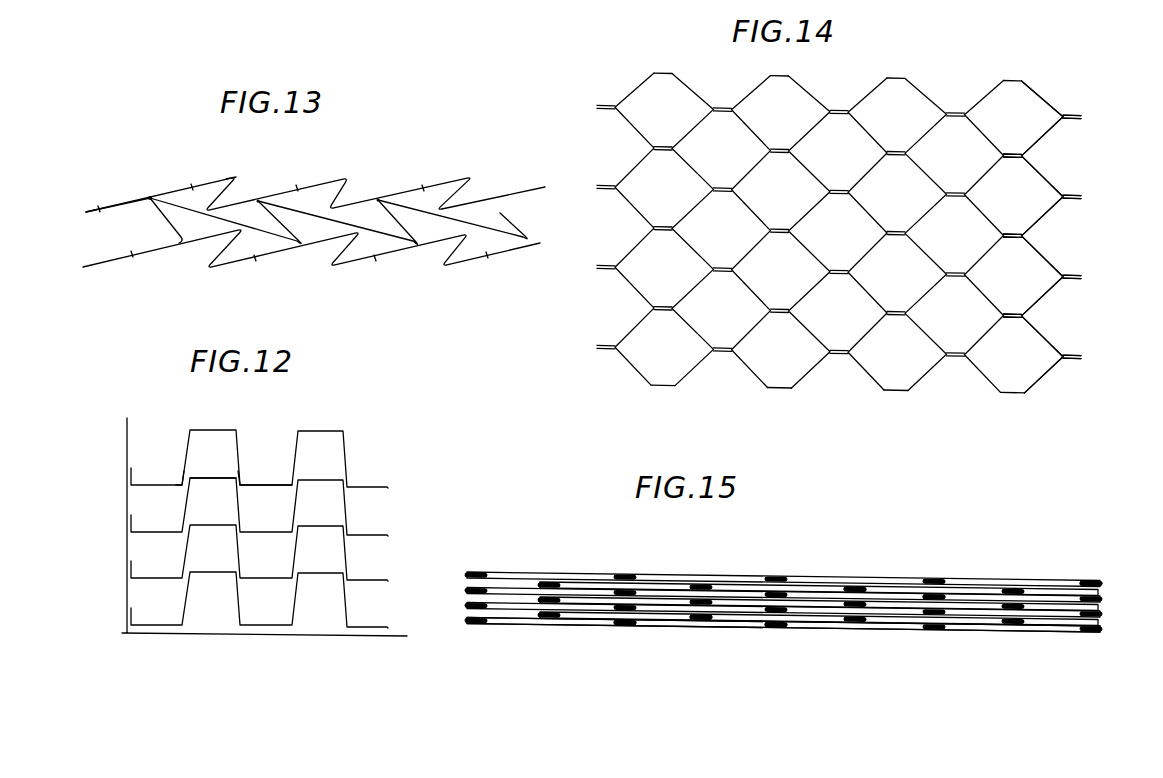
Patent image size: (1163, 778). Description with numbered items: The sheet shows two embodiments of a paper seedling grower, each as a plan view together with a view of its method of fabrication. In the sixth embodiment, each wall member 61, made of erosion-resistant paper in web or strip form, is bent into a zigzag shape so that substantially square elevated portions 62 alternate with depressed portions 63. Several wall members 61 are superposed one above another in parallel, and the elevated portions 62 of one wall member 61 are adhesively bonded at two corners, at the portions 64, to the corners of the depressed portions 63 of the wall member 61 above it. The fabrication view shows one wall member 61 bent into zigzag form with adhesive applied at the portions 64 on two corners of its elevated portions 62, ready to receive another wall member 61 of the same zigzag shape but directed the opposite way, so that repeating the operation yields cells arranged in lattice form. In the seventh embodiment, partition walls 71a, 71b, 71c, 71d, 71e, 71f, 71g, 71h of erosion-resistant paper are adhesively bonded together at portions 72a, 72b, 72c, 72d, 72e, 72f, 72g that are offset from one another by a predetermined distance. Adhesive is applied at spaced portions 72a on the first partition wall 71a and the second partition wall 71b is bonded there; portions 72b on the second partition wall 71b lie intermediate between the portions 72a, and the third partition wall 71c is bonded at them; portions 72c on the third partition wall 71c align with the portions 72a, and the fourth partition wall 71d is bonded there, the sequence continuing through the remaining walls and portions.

In FIG. 13, the wall member 61 is at (118, 204).
In FIG. 12, the wall member 61 is at (148, 487).
In FIG. 13, the elevated portion 62 is at (229, 175).
In FIG. 12, the elevated portion 62 is at (212, 477).
In FIG. 13, the depressed portion 63 is at (128, 201).
In FIG. 12, the depressed portion 63 is at (268, 485).
In FIG. 13, the bonded portion 64 is at (150, 198).
In FIG. 12, the bonded portion 64 is at (182, 483).
In FIG. 14, the first partition wall 71a is at (1045, 96).
In FIG. 15, the first partition wall 71a is at (1033, 580).
In FIG. 14, the second partition wall 71b is at (1048, 137).
In FIG. 15, the second partition wall 71b is at (977, 588).
In FIG. 14, the third partition wall 71c is at (1048, 181).
In FIG. 15, the third partition wall 71c is at (893, 592).
In FIG. 14, the fourth partition wall 71d is at (1045, 217).
In FIG. 15, the fourth partition wall 71d is at (815, 600).
In FIG. 14, the partition wall 71e is at (1045, 258).
In FIG. 15, the partition wall 71e is at (743, 608).
In FIG. 14, the partition wall 71f is at (1045, 298).
In FIG. 15, the partition wall 71f is at (663, 614).
In FIG. 14, the partition wall 71g is at (1045, 337).
In FIG. 15, the partition wall 71g is at (583, 621).
In FIG. 14, the partition wall 71h is at (1045, 374).
In FIG. 15, the partition wall 71h is at (513, 624).
In FIG. 14, the bonded portion 72a is at (1080, 114).
In FIG. 15, the bonded portion 72a is at (1092, 582).
In FIG. 14, the bonded portion 72b is at (1013, 154).
In FIG. 14, the bonded portion 72c is at (1078, 199).
In FIG. 15, the bonded portion 72c is at (934, 597).
In FIG. 14, the bonded portion 72d is at (1013, 234).
In FIG. 15, the bonded portion 72d is at (855, 583).
In FIG. 14, the bonded portion 72e is at (1078, 278).
In FIG. 15, the bonded portion 72e is at (783, 627).
In FIG. 14, the bonded portion 72f is at (1012, 312).
In FIG. 15, the bonded portion 72f is at (702, 618).
In FIG. 14, the bonded portion 72g is at (1072, 360).
In FIG. 15, the bonded portion 72g is at (625, 628).